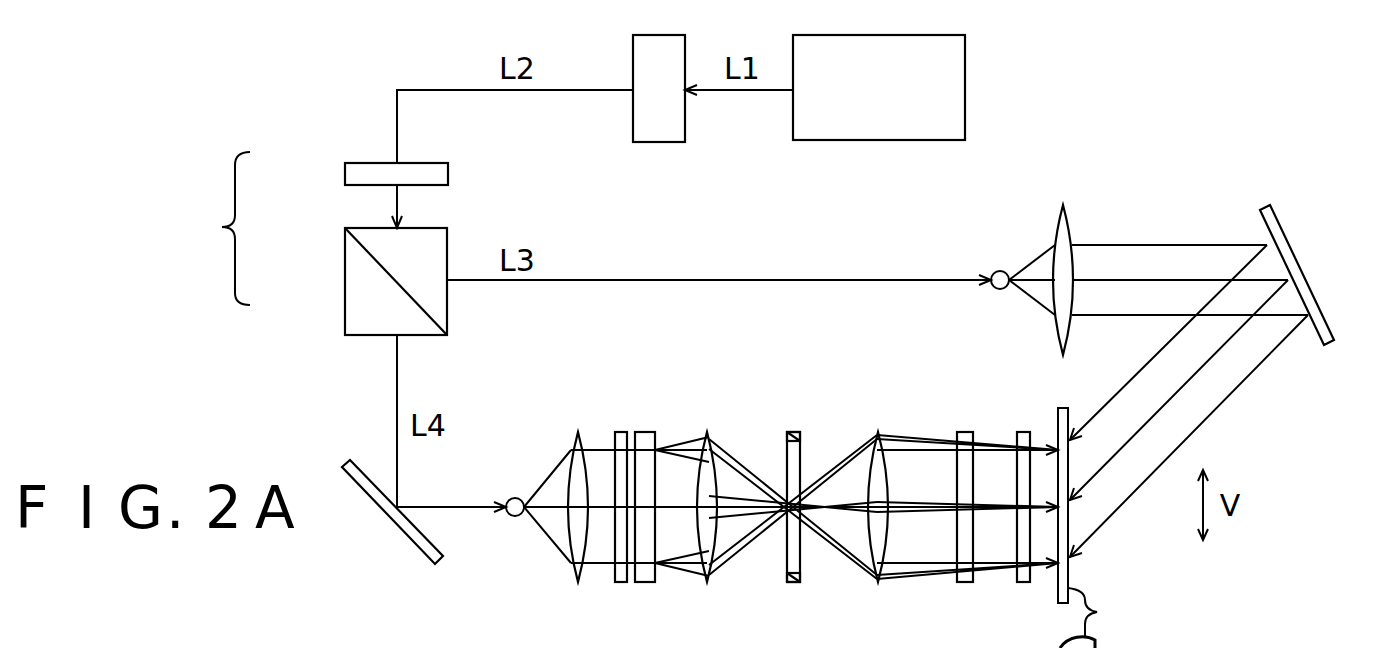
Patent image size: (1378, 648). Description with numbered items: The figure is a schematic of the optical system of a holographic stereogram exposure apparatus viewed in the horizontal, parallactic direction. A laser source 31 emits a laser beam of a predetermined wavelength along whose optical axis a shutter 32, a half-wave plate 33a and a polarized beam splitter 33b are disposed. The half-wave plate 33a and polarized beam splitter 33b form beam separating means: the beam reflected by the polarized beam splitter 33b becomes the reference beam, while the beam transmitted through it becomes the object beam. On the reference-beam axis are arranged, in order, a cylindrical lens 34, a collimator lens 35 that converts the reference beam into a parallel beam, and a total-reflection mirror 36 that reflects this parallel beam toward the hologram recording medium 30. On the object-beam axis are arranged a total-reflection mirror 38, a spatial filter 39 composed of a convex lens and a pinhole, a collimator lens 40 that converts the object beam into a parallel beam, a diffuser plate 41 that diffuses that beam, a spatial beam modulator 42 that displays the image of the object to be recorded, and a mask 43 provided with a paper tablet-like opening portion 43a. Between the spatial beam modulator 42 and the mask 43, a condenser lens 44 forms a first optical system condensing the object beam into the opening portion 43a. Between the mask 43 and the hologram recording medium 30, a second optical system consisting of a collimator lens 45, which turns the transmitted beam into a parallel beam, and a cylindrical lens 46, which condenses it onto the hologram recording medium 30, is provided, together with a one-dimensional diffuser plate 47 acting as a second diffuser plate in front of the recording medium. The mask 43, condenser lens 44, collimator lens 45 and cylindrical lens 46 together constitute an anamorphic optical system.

The hologram recording medium 30 is at (658, 400).
The laser source 31 is at (880, 141).
The shutter 32 is at (660, 143).
The half-wave plate 33a is at (345, 175).
The polarized beam splitter 33b is at (345, 283).
The cylindrical lens 34 is at (1000, 270).
The collimator lens 35 is at (1063, 206).
The total-reflection mirror 36 is at (1310, 282).
The total-reflection mirror 38 is at (385, 518).
The spatial filter 39 is at (516, 518).
The collimator lens 40 is at (575, 583).
The diffuser plate 41 is at (620, 583).
The spatial beam modulator 42 is at (646, 583).
The mask 43 is at (794, 583).
The opening portion 43a is at (787, 574).
The condenser lens 44 is at (708, 583).
The collimator lens 45 is at (879, 583).
The cylindrical lens 46 is at (965, 583).
The one-dimensional diffuser plate 47 is at (1023, 583).